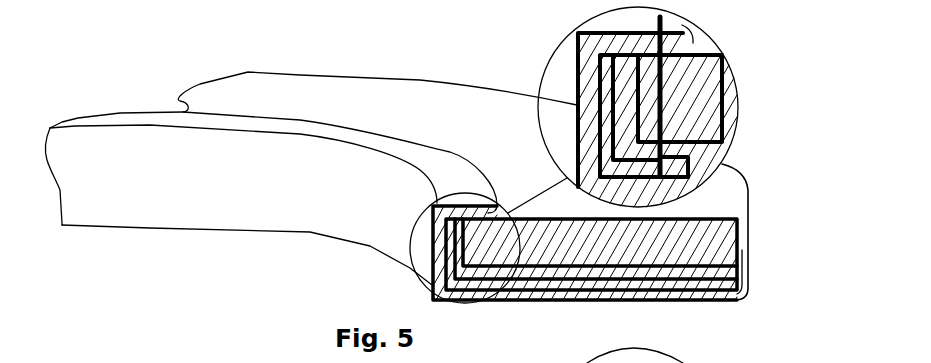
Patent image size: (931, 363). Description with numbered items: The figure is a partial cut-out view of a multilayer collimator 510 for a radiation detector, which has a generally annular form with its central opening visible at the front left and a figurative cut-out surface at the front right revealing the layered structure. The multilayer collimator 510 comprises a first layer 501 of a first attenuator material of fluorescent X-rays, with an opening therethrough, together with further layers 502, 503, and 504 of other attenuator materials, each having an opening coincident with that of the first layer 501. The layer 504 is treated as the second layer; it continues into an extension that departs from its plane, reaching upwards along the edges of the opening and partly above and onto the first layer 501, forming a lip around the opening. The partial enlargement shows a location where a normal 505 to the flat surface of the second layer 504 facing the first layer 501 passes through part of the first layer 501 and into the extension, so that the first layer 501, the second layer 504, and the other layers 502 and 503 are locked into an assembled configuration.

The first layer 501 is at (723, 128).
The layer 502 is at (452, 236).
The layer 503 is at (450, 267).
The second layer 504 is at (587, 78).
The normal 505 is at (662, 75).
The multilayer collimator 510 is at (758, 163).